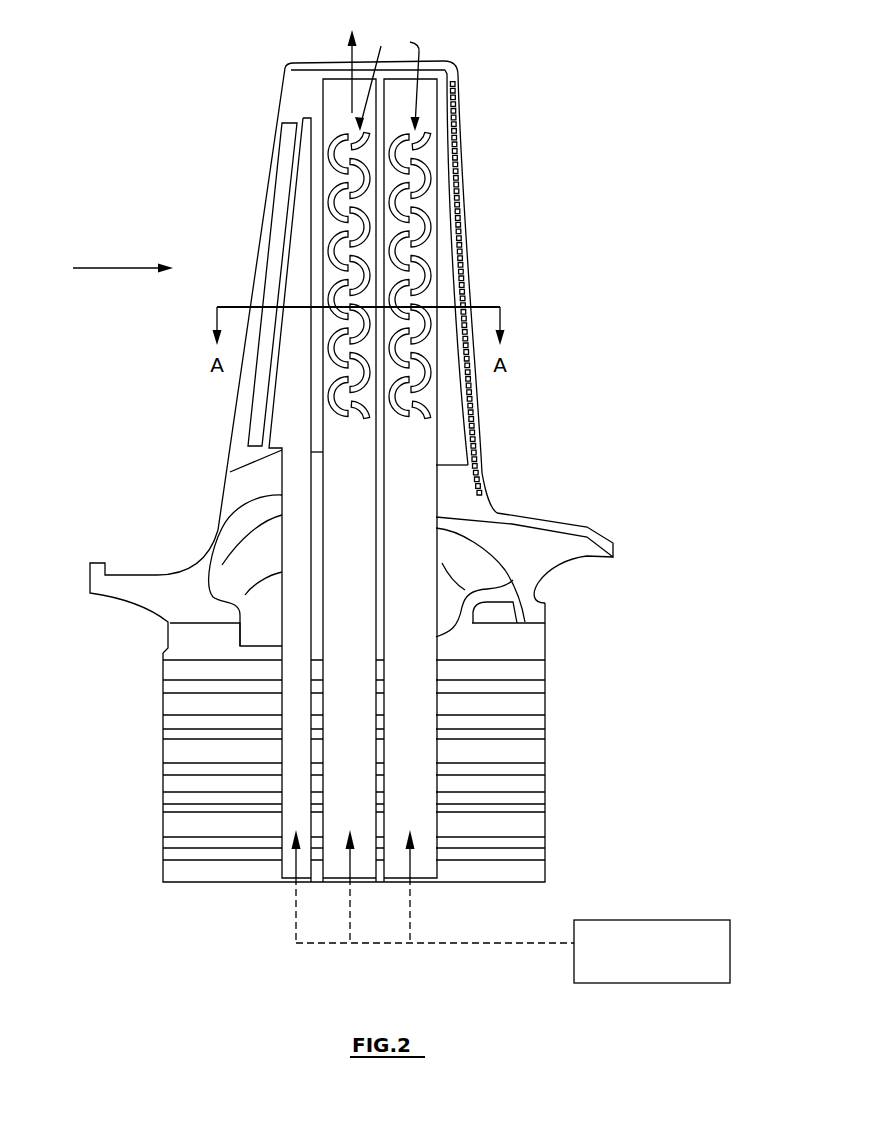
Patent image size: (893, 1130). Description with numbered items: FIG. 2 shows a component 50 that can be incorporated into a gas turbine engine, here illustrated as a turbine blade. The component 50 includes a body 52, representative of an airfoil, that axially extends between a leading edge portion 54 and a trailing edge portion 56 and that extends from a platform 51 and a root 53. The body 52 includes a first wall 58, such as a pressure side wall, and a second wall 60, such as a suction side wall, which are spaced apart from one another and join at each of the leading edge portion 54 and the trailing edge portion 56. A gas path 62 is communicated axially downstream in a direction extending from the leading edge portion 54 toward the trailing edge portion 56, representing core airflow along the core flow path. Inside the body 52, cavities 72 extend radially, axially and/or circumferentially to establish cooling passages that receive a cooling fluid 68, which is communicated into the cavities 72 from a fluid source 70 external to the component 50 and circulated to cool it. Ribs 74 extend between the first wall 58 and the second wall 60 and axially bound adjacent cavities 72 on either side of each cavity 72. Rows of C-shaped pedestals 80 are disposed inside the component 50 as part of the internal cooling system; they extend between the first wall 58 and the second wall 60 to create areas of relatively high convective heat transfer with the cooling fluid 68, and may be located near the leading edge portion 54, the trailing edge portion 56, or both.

The component 50 is at (137, 151).
The platform 51 is at (157, 577).
The body 52 is at (343, 303).
The root 53 is at (545, 750).
The leading edge portion 54 is at (262, 212).
The trailing edge portion 56 is at (462, 197).
The first wall 58 is at (275, 106).
The second wall 60 is at (273, 64).
The gas path 62 is at (113, 270).
The cooling fluid 68 is at (350, 50).
The fluid source 70 is at (731, 957).
The cavities 72 is at (305, 408).
The ribs 74 is at (382, 187).
The C-shaped pedestals 80 is at (387, 81).